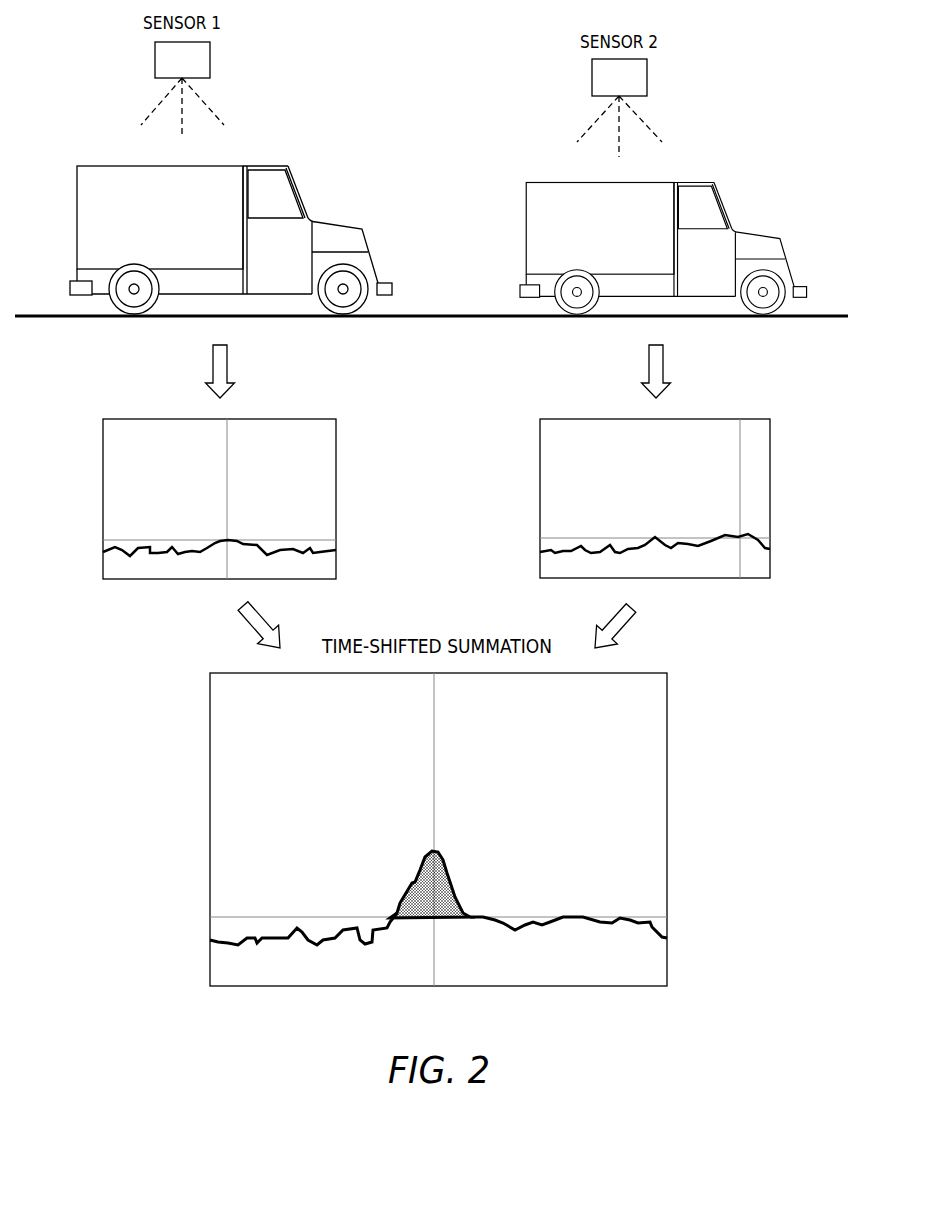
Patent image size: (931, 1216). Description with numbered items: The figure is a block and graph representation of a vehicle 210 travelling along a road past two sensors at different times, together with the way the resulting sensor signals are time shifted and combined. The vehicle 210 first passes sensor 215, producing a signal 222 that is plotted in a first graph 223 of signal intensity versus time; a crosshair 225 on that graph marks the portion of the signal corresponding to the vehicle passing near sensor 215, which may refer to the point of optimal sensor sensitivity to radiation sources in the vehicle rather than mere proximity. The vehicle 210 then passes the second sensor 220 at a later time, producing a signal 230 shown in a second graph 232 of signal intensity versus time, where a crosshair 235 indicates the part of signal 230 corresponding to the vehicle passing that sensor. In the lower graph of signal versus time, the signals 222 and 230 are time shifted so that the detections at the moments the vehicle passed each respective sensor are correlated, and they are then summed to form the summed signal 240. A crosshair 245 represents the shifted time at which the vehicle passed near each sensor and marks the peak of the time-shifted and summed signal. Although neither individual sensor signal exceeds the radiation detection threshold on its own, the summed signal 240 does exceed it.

The vehicle 210 is at (301, 190).
The sensor 215 is at (210, 58).
The sensor 220 is at (647, 78).
The signal 222 is at (177, 543).
The first graph 223 is at (163, 419).
The crosshair 225 is at (227, 474).
The signal 230 is at (646, 543).
The second graph 232 is at (600, 419).
The crosshair 235 is at (740, 474).
The summed signal 240 is at (448, 873).
The crosshair 245 is at (434, 749).